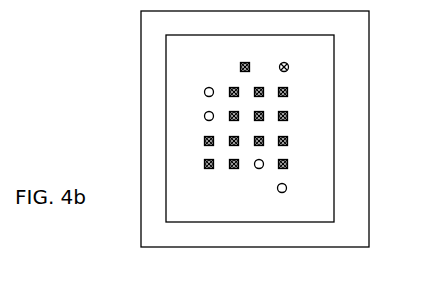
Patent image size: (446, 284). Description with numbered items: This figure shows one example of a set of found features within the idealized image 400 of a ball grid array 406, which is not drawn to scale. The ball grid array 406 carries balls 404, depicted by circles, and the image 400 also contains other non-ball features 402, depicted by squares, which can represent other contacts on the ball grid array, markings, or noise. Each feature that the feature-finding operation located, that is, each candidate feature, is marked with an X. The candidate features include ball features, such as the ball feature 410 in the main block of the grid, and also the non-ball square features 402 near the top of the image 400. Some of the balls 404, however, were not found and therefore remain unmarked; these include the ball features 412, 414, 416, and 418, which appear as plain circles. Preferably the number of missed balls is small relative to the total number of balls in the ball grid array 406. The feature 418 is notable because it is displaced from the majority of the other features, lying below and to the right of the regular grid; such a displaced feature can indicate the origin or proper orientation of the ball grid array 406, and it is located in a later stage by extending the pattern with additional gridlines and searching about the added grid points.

The image 400 is at (369, 35).
The non-ball features 402 is at (250, 67).
The balls 404 is at (204, 116).
The ball grid array 406 is at (318, 222).
The ball feature 410 is at (288, 116).
The ball feature 412 is at (204, 92).
The ball feature 414 is at (202, 116).
The ball feature 416 is at (262, 168).
The ball feature 418 is at (286, 191).